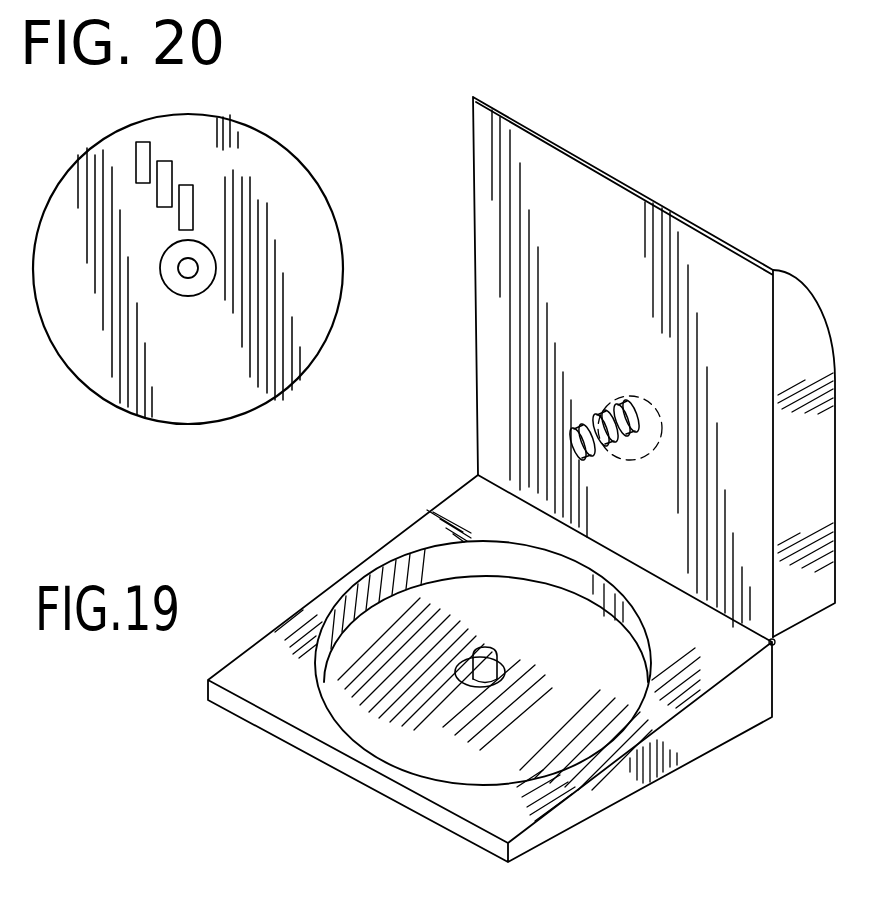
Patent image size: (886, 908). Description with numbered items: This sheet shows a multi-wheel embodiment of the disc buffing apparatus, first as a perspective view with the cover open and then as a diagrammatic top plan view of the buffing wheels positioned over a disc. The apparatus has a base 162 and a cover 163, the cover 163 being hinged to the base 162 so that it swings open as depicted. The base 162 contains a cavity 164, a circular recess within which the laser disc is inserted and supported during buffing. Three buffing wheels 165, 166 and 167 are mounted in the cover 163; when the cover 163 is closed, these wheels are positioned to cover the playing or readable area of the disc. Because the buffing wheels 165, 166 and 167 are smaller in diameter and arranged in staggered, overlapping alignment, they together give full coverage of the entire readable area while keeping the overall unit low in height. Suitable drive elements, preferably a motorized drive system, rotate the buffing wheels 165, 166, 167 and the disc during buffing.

In FIG. 19, the base 162 is at (712, 725).
In FIG. 19, the cover 163 is at (812, 515).
In FIG. 19, the cavity 164 is at (623, 612).
In FIG. 20, the buffing wheel 165 is at (134, 160).
In FIG. 19, the buffing wheel 165 is at (585, 420).
In FIG. 20, the buffing wheel 166 is at (162, 170).
In FIG. 19, the buffing wheel 166 is at (607, 409).
In FIG. 20, the buffing wheel 167 is at (184, 200).
In FIG. 19, the buffing wheel 167 is at (628, 400).